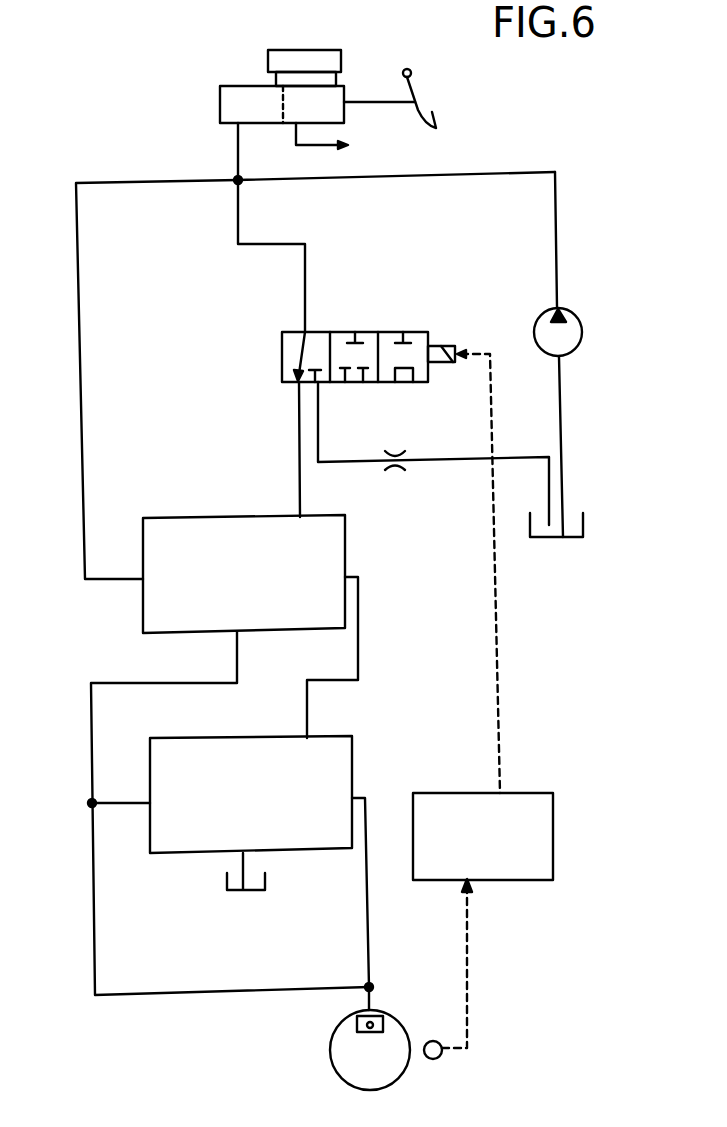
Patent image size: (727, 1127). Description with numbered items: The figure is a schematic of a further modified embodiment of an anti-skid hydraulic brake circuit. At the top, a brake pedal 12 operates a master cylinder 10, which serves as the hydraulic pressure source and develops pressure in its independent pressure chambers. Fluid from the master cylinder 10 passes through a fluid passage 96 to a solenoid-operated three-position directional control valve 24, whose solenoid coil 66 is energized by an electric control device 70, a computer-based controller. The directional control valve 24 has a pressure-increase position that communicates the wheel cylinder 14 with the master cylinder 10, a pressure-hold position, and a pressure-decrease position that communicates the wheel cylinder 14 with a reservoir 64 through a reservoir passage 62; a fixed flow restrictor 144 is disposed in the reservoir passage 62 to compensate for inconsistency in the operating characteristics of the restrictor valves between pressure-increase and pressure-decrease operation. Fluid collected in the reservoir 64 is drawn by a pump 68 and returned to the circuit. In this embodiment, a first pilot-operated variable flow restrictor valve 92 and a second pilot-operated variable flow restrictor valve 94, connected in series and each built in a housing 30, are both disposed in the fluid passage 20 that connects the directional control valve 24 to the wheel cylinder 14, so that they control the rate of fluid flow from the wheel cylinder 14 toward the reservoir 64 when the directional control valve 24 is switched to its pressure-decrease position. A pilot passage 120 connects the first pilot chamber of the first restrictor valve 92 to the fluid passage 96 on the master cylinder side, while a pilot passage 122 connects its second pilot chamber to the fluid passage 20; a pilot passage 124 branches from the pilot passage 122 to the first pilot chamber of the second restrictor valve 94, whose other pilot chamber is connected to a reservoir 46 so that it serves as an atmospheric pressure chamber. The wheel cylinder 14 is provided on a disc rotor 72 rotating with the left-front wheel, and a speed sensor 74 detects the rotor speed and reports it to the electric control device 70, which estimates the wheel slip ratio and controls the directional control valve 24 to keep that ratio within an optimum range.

The master cylinder 10 is at (222, 107).
The brake pedal 12 is at (420, 112).
The wheel cylinder 14 is at (357, 1024).
The fluid passage 20 is at (276, 451).
The three-position directional control valve 24 is at (370, 306).
The housing 30 is at (230, 530).
The reservoir 46 is at (225, 878).
The reservoir passage 62 is at (452, 458).
The reservoir 64 is at (573, 540).
The solenoid coil 66 is at (445, 346).
The pump 68 is at (568, 336).
The electric control device 70 is at (543, 860).
The disc rotor 72 is at (345, 1068).
The speed sensor 74 is at (440, 1058).
The first pilot-operated variable flow restrictor valve 92 is at (173, 492).
The second pilot-operated variable flow restrictor valve 94 is at (160, 870).
The fluid passage 96 is at (241, 215).
The pilot passage 120 is at (135, 180).
The pilot passage 122 is at (89, 718).
The pilot passage 124 is at (120, 803).
The fixed flow restrictor 144 is at (398, 450).